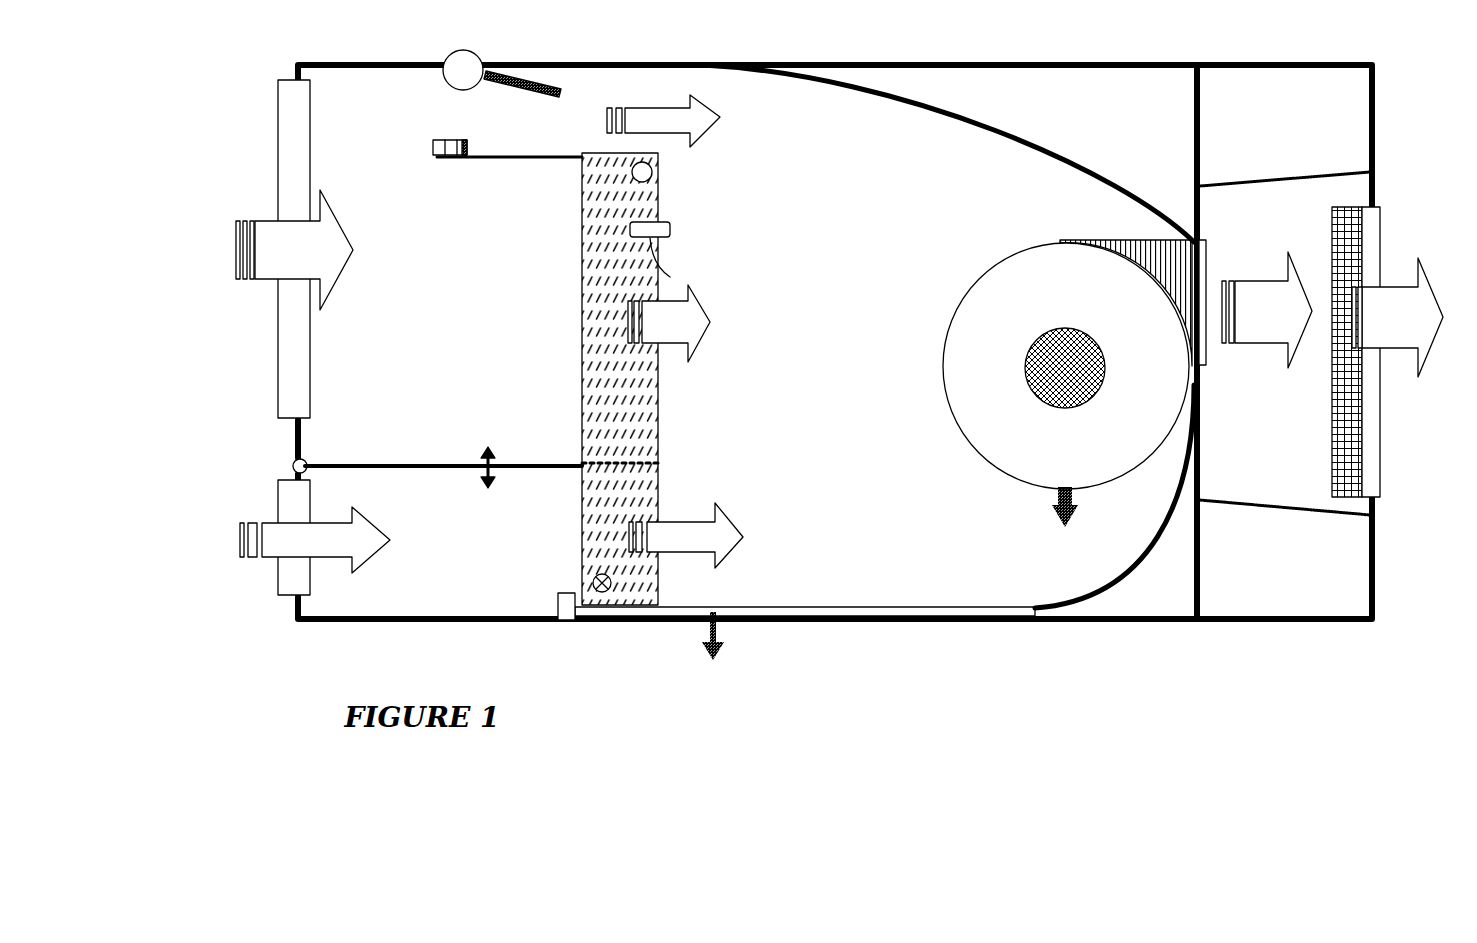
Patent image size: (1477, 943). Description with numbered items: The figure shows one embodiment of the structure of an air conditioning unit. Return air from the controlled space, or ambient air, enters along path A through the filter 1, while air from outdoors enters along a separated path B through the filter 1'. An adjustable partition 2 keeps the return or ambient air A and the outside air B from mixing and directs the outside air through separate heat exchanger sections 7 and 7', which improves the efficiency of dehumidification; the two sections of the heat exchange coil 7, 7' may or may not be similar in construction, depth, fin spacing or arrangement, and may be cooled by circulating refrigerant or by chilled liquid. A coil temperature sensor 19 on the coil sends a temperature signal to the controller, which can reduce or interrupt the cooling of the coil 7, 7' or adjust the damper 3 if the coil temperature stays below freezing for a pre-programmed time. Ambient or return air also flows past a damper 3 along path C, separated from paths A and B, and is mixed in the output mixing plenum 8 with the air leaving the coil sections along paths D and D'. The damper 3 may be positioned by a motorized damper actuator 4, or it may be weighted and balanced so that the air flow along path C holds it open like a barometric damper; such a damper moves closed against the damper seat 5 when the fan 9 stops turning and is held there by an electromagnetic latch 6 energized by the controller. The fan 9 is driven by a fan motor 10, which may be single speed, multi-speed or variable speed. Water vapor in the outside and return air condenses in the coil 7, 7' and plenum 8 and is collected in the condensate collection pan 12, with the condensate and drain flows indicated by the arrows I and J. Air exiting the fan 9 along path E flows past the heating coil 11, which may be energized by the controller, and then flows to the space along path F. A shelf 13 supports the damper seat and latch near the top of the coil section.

The filter 1 is at (260, 253).
The filter 1' is at (252, 529).
The adjustable partition 2 is at (428, 466).
The damper 3 is at (560, 95).
The motorized damper actuator 4 is at (482, 50).
The damper seat 5 is at (468, 145).
The electromagnetic latch 6 is at (440, 158).
The heat exchanger section 7 is at (571, 379).
The heat exchanger section 7' is at (540, 539).
The output mixing plenum 8 is at (870, 337).
The fan 9 is at (1153, 450).
The fan motor 10 is at (1090, 340).
The heating coil 11 is at (1342, 387).
The condensate collection pan 12 is at (800, 605).
The shelf 13 is at (562, 160).
The coil temperature sensor 19 is at (670, 277).
The return air path A is at (242, 240).
The outside air path B is at (238, 543).
The bypass air path C is at (723, 118).
The coil exit air path D is at (711, 337).
The lower air flow through exchanger D' is at (710, 542).
The fan exit air path E is at (1307, 330).
The supply air path F is at (1440, 317).
The condensate flow I is at (1053, 493).
The drain flow J is at (707, 637).